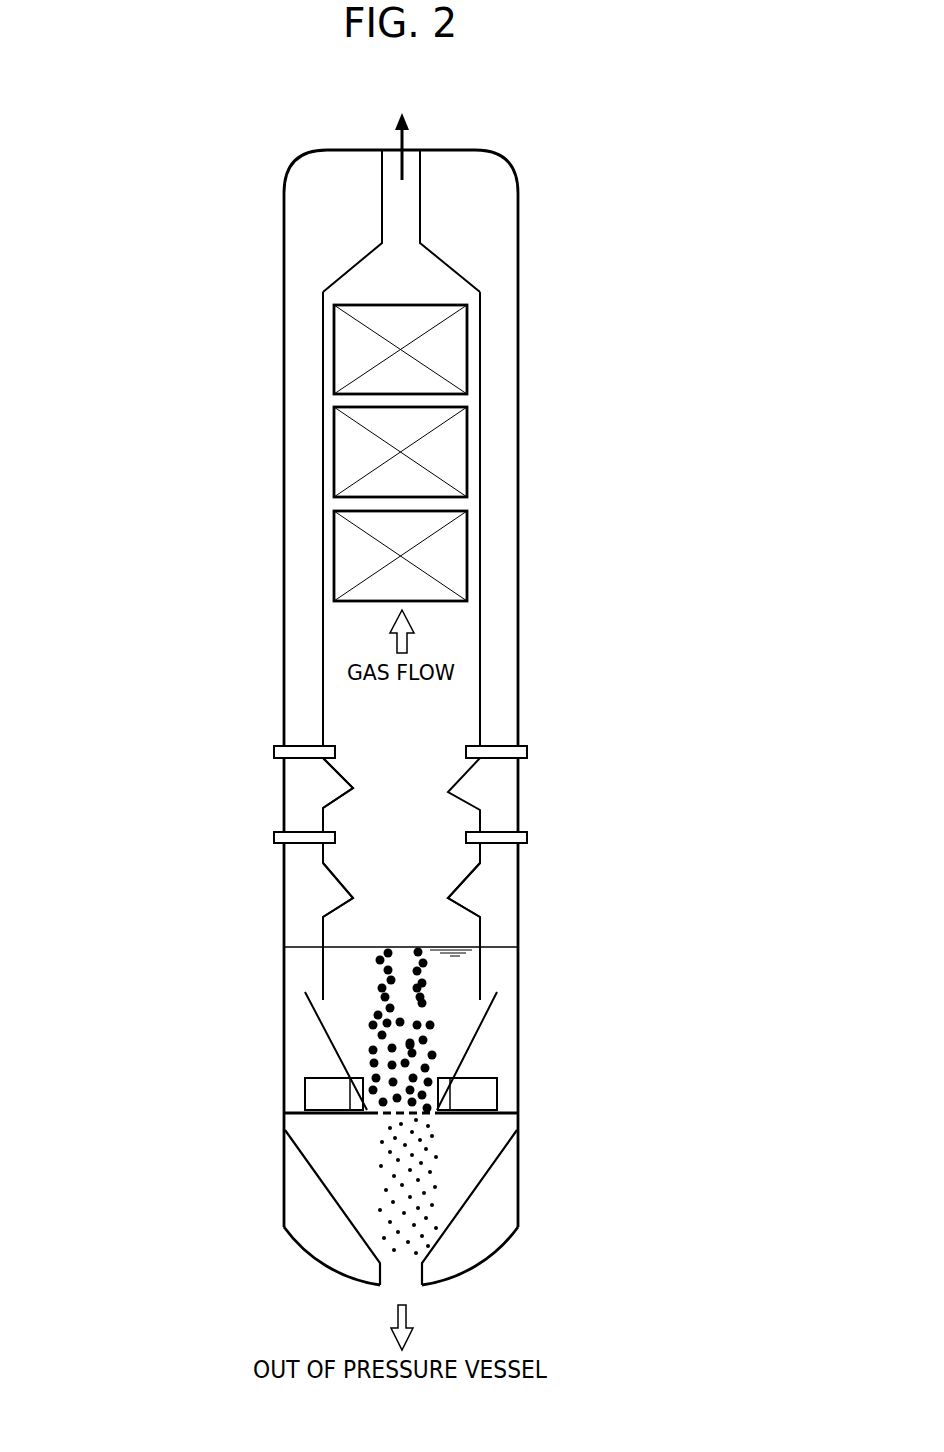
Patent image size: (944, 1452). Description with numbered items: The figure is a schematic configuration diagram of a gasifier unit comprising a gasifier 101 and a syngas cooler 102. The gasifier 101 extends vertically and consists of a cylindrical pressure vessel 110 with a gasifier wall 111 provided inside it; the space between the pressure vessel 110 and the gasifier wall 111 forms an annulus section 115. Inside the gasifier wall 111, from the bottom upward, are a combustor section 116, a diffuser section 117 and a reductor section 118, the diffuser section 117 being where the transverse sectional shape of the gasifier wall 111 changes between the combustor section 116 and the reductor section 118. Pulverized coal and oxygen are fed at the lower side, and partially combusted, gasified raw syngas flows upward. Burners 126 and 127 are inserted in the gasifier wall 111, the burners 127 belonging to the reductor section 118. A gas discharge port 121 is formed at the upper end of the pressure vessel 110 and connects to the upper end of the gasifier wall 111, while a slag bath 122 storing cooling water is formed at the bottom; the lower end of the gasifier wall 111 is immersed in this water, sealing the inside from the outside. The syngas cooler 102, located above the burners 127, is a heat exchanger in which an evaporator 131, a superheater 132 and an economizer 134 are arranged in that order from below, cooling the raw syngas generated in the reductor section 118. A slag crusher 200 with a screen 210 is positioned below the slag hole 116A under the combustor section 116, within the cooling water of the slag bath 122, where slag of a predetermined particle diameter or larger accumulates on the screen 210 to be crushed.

The gasifier 101 is at (408, 680).
The syngas cooler 102 is at (311, 453).
The pressure vessel 110 is at (518, 597).
The gasifier wall 111 is at (480, 652).
The annulus section 115 is at (500, 532).
The combustor section 116 is at (388, 866).
The slag hole 116A is at (432, 898).
The diffuser section 117 is at (388, 802).
The reductor section 118 is at (388, 703).
The gas discharge port 121 is at (412, 150).
The slag bath 122 is at (518, 975).
The burner 126 is at (528, 838).
The burner 127 is at (528, 751).
The evaporator 131 is at (342, 556).
The superheater 132 is at (334, 452).
The economizer 134 is at (334, 350).
The slag crusher 200 is at (443, 1089).
The screen 210 is at (387, 1114).